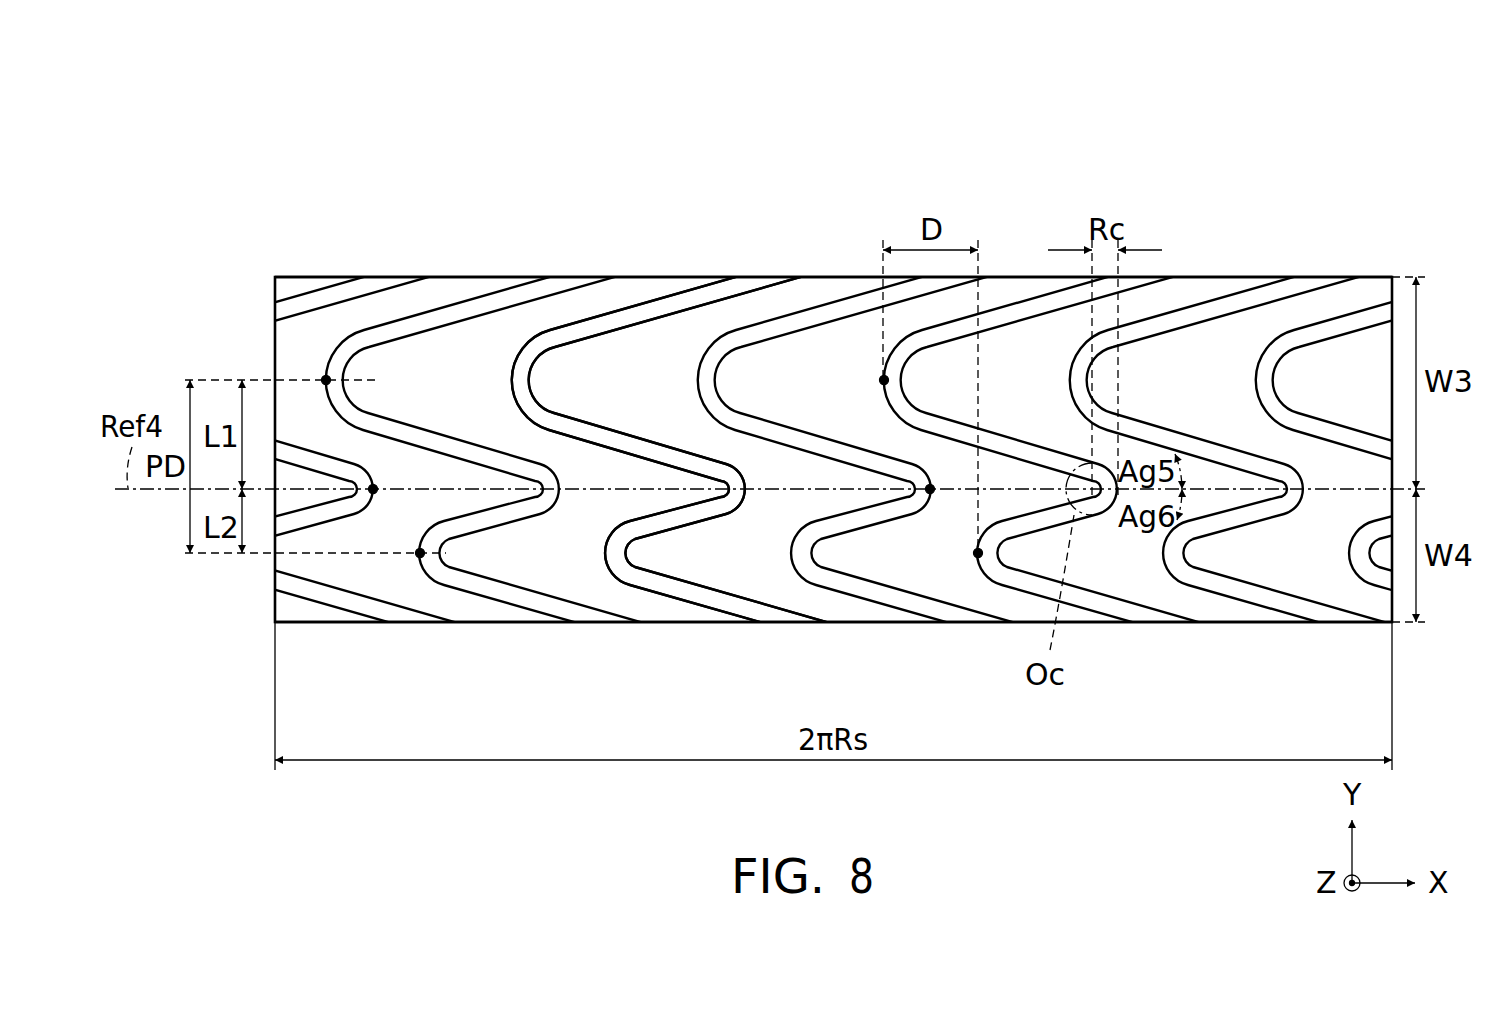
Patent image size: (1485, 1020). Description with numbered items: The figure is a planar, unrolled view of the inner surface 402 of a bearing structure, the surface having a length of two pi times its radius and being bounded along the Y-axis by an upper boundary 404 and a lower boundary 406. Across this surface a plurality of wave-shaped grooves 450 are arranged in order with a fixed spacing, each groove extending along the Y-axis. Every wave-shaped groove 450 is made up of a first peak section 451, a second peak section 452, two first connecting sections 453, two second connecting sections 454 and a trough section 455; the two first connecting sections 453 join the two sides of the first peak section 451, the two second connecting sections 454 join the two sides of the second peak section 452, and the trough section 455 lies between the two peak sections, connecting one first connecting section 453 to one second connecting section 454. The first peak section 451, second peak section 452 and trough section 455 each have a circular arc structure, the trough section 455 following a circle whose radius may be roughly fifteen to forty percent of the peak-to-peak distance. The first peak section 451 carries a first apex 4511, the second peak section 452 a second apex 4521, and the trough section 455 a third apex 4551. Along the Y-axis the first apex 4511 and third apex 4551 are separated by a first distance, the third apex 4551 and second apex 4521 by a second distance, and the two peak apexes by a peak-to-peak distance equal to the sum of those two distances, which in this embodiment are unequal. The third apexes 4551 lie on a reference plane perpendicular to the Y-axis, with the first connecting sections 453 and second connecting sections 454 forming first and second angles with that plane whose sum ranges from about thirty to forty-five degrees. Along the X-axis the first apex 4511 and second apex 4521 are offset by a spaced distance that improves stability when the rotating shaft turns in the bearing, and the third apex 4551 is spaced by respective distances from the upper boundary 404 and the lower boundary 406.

The inner surface 402 is at (232, 112).
The upper boundary 404 is at (460, 277).
The lower boundary 406 is at (505, 622).
The wave-shaped groove 450 is at (1242, 290).
The first peak section 451 is at (540, 323).
The second peak section 452 is at (615, 516).
The first connecting section 453 is at (792, 282).
The second connecting section 454 is at (806, 706).
The trough section 455 is at (730, 520).
The first apex 4511 is at (326, 380).
The second apex 4521 is at (420, 555).
The third apex 4551 is at (375, 489).